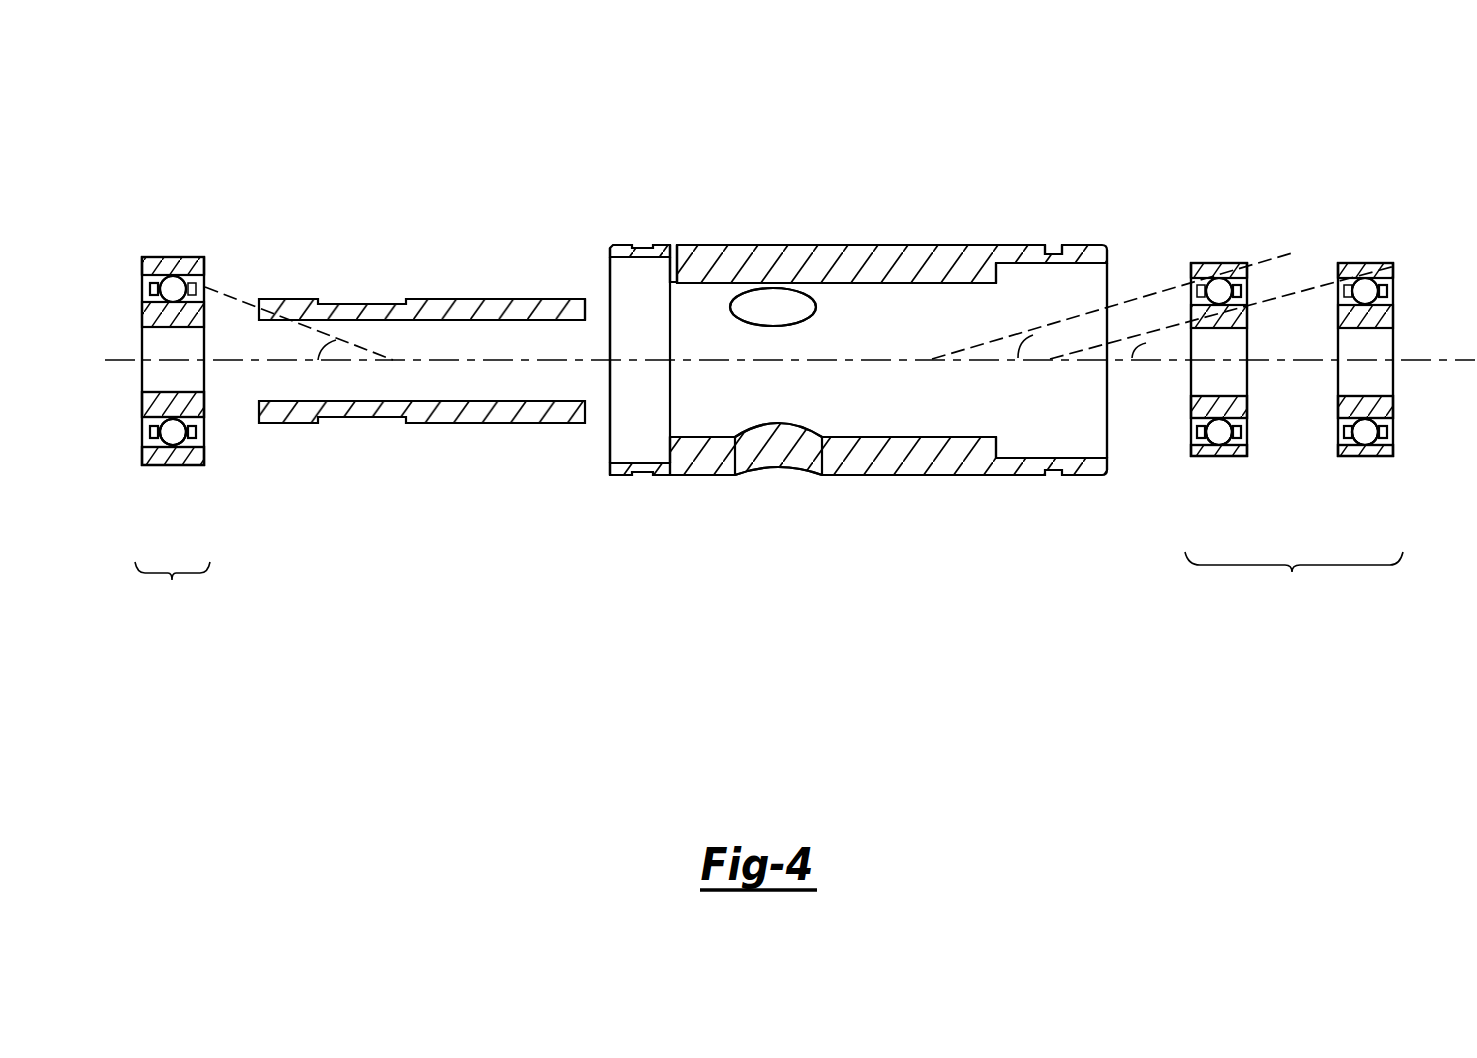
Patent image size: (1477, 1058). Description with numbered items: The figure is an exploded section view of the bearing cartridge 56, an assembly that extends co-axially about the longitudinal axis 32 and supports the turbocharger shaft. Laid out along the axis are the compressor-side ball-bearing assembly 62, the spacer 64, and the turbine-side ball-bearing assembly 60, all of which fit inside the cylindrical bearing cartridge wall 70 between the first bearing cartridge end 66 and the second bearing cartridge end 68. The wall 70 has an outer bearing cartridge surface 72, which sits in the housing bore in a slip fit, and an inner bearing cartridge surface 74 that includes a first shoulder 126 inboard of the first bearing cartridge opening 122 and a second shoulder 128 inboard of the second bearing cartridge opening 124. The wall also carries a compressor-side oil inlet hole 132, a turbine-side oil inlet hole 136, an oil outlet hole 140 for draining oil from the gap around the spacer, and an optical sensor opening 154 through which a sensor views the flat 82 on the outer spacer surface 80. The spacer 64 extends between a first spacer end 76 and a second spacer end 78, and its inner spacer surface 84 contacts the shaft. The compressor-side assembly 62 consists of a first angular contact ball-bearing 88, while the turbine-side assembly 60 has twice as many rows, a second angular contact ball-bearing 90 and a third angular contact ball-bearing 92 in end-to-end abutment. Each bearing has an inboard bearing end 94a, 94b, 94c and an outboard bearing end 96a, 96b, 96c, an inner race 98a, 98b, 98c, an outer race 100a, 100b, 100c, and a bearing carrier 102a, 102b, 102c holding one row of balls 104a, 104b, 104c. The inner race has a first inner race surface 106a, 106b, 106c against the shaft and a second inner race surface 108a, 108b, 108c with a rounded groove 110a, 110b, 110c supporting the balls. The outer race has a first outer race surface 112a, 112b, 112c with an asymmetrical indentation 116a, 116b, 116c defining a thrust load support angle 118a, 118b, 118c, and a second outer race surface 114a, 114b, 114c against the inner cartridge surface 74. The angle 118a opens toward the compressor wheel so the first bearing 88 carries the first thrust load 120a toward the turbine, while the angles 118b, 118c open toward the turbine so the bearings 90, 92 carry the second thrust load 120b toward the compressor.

The longitudinal axis 32 is at (398, 362).
The bearing cartridge 56 is at (568, 82).
The turbine-side ball-bearing assembly 60 is at (1294, 576).
The compressor-side ball-bearing assembly 62 is at (172, 585).
The spacer 64 is at (452, 405).
The first bearing cartridge end 66 is at (567, 192).
The second bearing cartridge end 68 is at (1100, 233).
The bearing cartridge wall 70 is at (930, 532).
The outer bearing cartridge surface 72 is at (890, 478).
The inner bearing cartridge surface 74 is at (840, 385).
The first spacer end 76 is at (290, 298).
The second spacer end 78 is at (532, 250).
The outer spacer surface 80 is at (432, 298).
The flat 82 is at (355, 303).
The inner spacer surface 84 is at (490, 323).
The first angular contact ball-bearing 88 is at (172, 256).
The second angular contact ball-bearing 90 is at (1366, 262).
The third angular contact ball-bearing 92 is at (1218, 262).
The inboard bearing end 94a is at (207, 262).
The inboard bearing end 94b is at (1150, 250).
The inboard bearing end 94c is at (1315, 230).
The outboard bearing end 96a is at (140, 262).
The outboard bearing end 96b is at (1243, 268).
The outboard bearing end 96c is at (1392, 270).
The inner race 98a is at (128, 390).
The inner race 98b is at (1178, 397).
The inner race 98c is at (1325, 400).
The outer race 100a is at (193, 257).
The outer race 100b is at (1185, 512).
The outer race 100c is at (1328, 512).
The bearing carrier 102a is at (135, 318).
The bearing carrier 102b is at (1240, 292).
The bearing carrier 102c is at (1392, 294).
The balls 104a is at (180, 290).
The balls 104b is at (1224, 296).
The balls 104c is at (1378, 292).
The first inner race surface 106a is at (181, 418).
The first inner race surface 106b is at (1224, 418).
The first inner race surface 106c is at (1372, 418).
The second inner race surface 108a is at (197, 432).
The second inner race surface 108b is at (1240, 432).
The second inner race surface 108c is at (1387, 432).
The rounded groove 110a is at (165, 444).
The rounded groove 110b is at (1210, 482).
The rounded groove 110c is at (1355, 482).
The first outer race surface 112a is at (120, 450).
The first outer race surface 112b is at (1170, 448).
The first outer race surface 112c is at (1313, 448).
The second outer race surface 114a is at (185, 462).
The second outer race surface 114b is at (1238, 460).
The second outer race surface 114c is at (1385, 460).
The asymmetrical indentation 116a is at (180, 437).
The asymmetrical indentation 116b is at (1225, 440).
The asymmetrical indentation 116c is at (1372, 440).
The thrust load support angle 118a is at (318, 362).
The thrust load support angle 118b is at (1020, 342).
The thrust load support angle 118c is at (1136, 350).
The first thrust load 120a is at (115, 155).
The second thrust load 120b is at (1400, 155).
The first bearing cartridge opening 122 is at (548, 447).
The second bearing cartridge opening 124 is at (1087, 447).
The first shoulder 126 is at (570, 512).
The second shoulder 128 is at (1003, 273).
The compressor-side oil inlet hole 132 is at (675, 247).
The turbine-side oil inlet hole 136 is at (1052, 256).
The oil outlet hole 140 is at (772, 455).
The optical sensor opening 154 is at (770, 302).